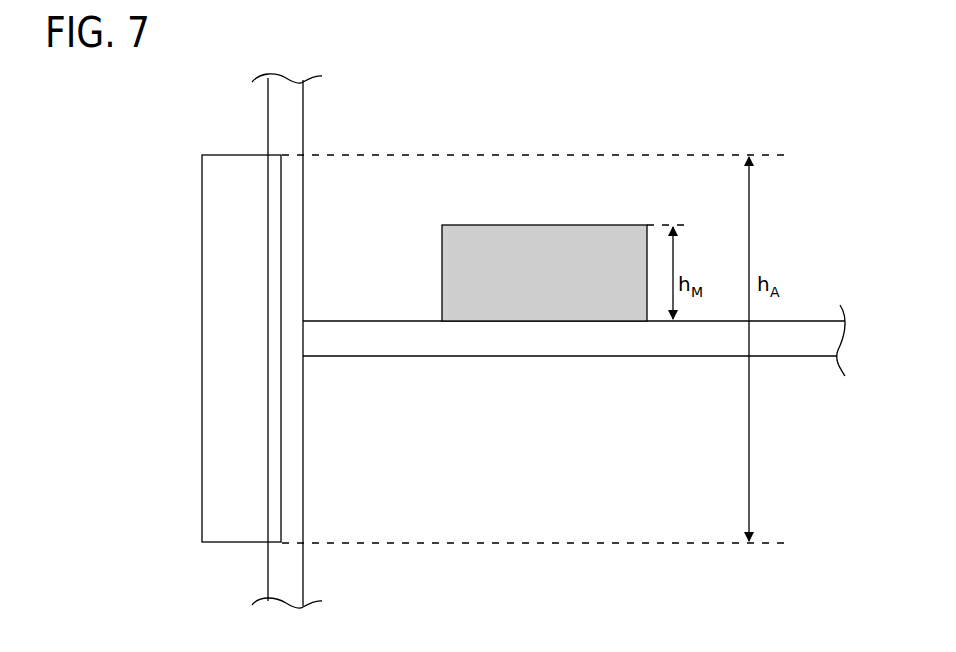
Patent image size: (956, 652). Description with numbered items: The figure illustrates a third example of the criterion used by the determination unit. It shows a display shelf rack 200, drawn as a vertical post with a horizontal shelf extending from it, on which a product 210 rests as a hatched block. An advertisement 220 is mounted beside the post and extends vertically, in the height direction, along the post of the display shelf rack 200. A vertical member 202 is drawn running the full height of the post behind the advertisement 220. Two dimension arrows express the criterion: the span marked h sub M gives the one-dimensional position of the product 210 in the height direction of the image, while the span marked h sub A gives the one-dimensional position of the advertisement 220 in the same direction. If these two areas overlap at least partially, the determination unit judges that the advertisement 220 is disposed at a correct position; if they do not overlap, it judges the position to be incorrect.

The display shelf rack 200 is at (811, 330).
The vertical support member 202 is at (272, 127).
The product 210 is at (442, 271).
The advertisement 220 is at (210, 402).